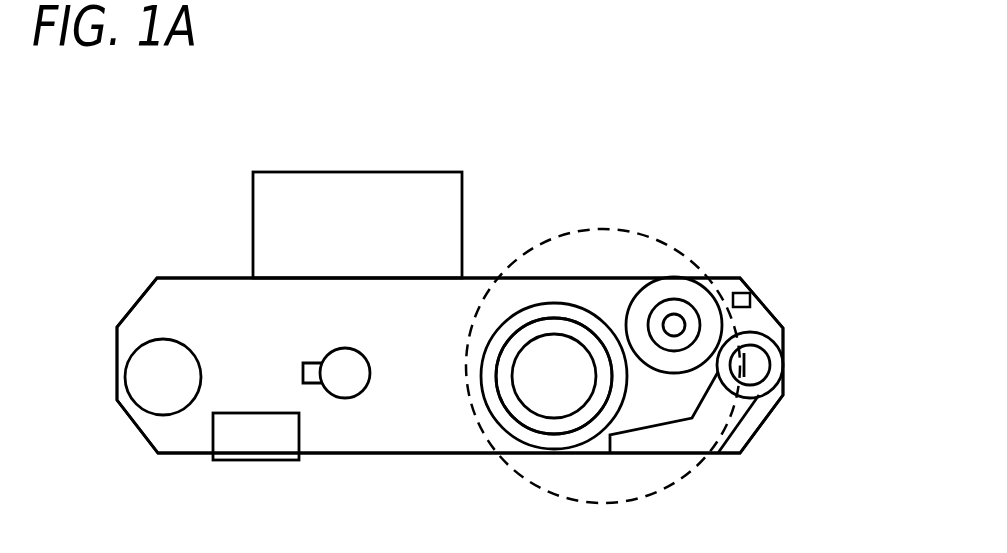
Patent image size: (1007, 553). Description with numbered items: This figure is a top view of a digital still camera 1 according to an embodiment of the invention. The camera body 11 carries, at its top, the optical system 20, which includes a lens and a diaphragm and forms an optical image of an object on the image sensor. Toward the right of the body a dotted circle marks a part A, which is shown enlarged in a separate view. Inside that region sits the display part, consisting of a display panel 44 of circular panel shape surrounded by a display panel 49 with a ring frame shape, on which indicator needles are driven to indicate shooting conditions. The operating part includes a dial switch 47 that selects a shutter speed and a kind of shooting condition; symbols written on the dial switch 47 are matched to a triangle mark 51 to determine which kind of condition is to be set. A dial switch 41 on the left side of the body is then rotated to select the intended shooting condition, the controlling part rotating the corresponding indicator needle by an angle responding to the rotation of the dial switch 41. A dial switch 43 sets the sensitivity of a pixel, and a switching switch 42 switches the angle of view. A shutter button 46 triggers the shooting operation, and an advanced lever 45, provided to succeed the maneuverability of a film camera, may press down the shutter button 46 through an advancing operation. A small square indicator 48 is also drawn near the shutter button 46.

The digital still camera 1 is at (134, 243).
The camera body 11 is at (215, 292).
The optical system 20 is at (443, 205).
The dial switch 41 is at (135, 403).
The switching switch 42 is at (345, 383).
The dial switch 43 is at (510, 422).
The display panel 44 is at (553, 400).
The advanced lever 45 is at (665, 442).
The shutter button 46 is at (681, 310).
The dial switch 47 is at (706, 304).
The indicator 48 is at (751, 293).
The display panel 49 is at (547, 330).
The triangle mark 51 is at (621, 286).
The part A is at (657, 230).